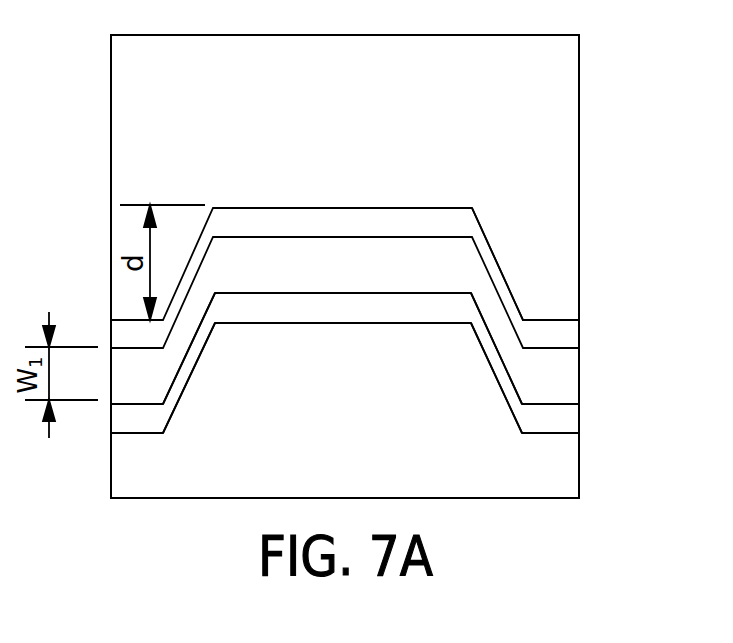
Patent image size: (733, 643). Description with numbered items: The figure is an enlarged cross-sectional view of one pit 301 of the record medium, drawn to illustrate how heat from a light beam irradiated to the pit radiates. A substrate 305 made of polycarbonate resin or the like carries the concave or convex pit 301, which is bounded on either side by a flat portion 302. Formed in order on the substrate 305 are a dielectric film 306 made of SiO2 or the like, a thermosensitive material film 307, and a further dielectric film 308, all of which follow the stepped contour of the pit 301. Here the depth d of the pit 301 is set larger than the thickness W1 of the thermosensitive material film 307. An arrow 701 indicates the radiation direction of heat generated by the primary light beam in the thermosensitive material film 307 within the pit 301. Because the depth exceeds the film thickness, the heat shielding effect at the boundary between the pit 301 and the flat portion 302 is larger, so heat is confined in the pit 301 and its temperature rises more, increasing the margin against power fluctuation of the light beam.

The pit 301 is at (322, 207).
The flat portion 302 is at (539, 318).
The substrate 305 is at (542, 77).
The dielectric film 306 is at (552, 327).
The thermosensitive material film 307 is at (547, 378).
The dielectric film 308 is at (557, 413).
The arrow 701 is at (492, 343).